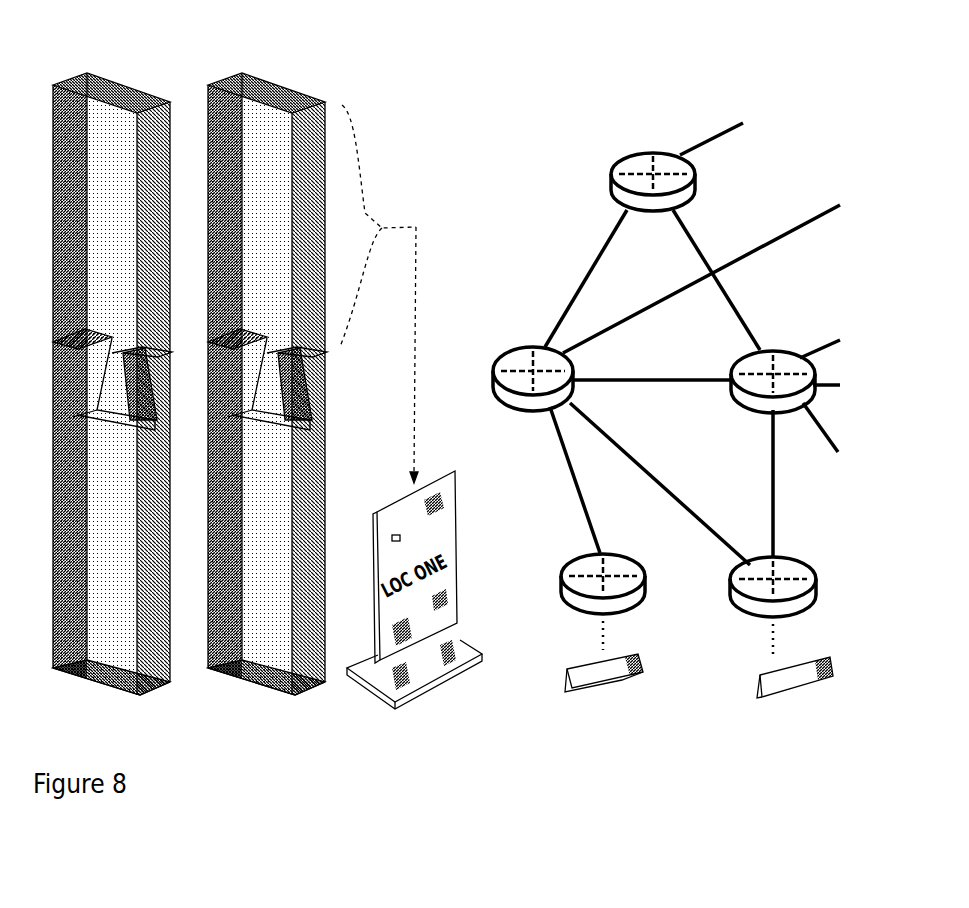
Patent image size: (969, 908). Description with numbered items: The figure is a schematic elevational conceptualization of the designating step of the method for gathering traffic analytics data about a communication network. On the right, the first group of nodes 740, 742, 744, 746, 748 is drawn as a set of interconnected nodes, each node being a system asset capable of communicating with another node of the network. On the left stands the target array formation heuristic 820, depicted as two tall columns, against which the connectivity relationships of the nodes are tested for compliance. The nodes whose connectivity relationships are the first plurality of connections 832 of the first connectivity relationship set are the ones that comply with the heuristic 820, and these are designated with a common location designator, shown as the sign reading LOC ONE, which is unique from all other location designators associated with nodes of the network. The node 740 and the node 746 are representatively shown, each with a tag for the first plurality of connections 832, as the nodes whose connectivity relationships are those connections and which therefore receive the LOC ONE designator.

The target array formation heuristic 820 is at (227, 672).
The first plurality of connections 832 is at (273, 80).
The node 740 is at (686, 549).
The node 742 is at (497, 356).
The node 744 is at (732, 366).
The node 746 is at (857, 561).
The node 748 is at (612, 184).